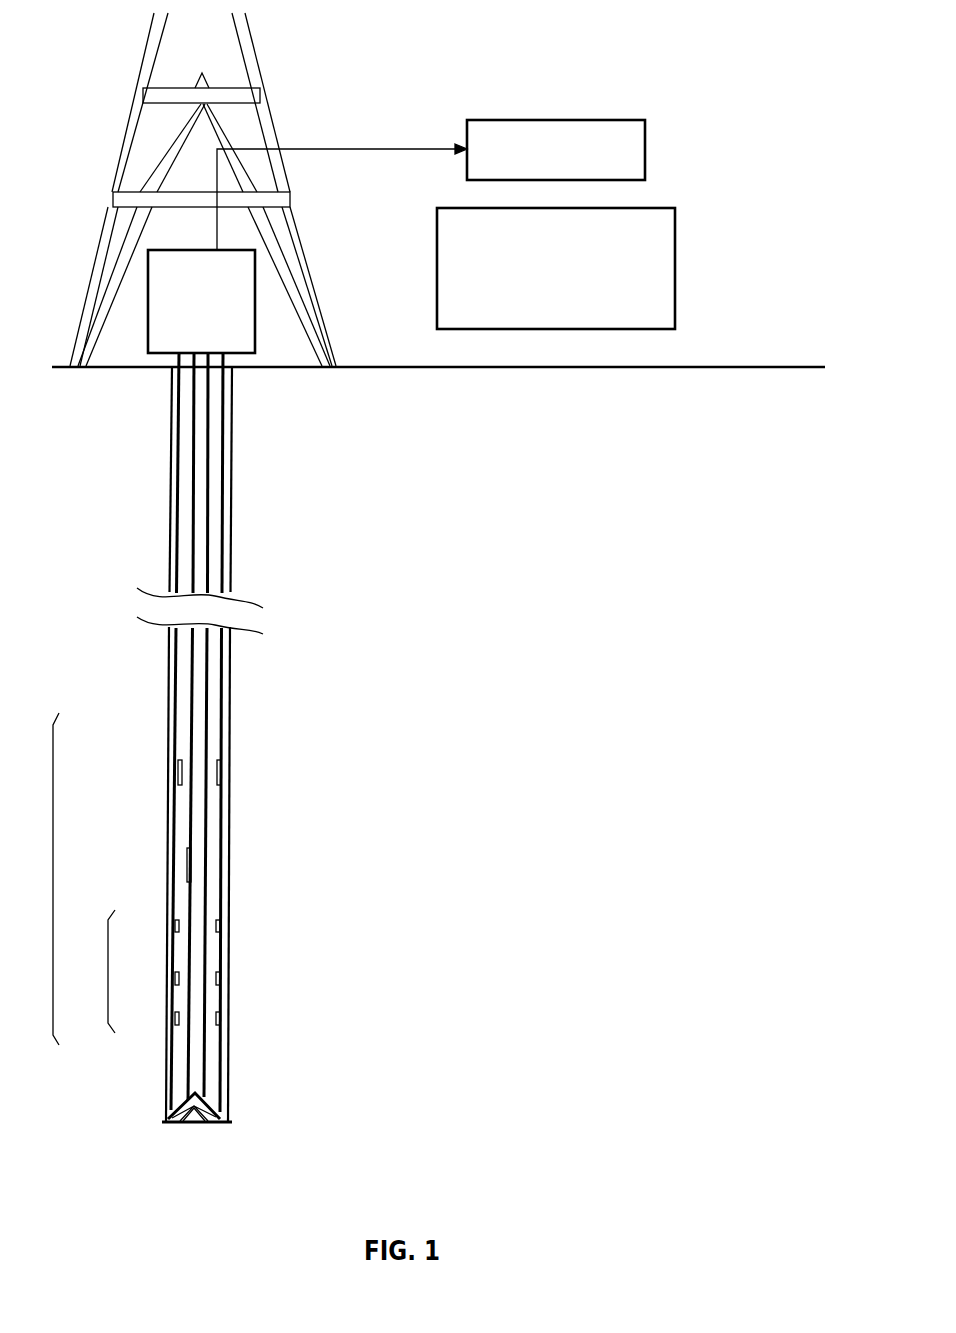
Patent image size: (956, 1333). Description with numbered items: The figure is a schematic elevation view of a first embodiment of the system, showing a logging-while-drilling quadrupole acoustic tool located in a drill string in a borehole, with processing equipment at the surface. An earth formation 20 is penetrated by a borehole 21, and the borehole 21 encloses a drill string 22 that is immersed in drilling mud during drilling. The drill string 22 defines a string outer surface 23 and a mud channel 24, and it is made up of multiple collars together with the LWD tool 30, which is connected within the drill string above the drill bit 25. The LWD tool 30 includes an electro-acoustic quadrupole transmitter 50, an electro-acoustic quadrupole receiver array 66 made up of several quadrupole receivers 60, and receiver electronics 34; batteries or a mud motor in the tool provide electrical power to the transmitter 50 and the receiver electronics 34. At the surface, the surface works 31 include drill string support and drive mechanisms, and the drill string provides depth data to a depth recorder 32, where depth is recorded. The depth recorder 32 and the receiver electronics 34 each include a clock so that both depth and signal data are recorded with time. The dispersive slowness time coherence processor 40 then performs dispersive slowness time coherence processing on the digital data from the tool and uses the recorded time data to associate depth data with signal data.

The earth formation 20 is at (348, 420).
The borehole 21 is at (172, 450).
The drill string 22 is at (208, 500).
The string outer surface 23 is at (177, 535).
The mud channel 24 is at (200, 582).
The drill bit 25 is at (176, 1100).
The LWD tool 30 is at (117, 879).
The surface works 31 is at (148, 272).
The depth recorder 32 is at (647, 151).
The receiver electronics 34 is at (189, 863).
The dispersive slowness time coherence processor 40 is at (677, 271).
The electro-acoustic quadrupole transmitter 50 is at (178, 770).
The quadrupole receiver 60 is at (172, 918).
The electro-acoustic quadrupole receiver array 66 is at (144, 951).